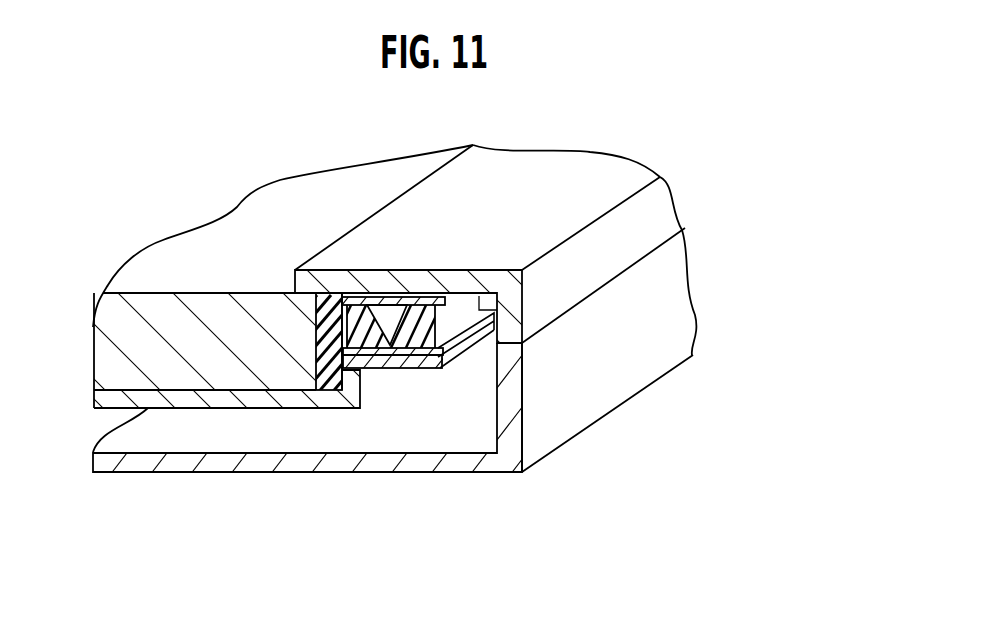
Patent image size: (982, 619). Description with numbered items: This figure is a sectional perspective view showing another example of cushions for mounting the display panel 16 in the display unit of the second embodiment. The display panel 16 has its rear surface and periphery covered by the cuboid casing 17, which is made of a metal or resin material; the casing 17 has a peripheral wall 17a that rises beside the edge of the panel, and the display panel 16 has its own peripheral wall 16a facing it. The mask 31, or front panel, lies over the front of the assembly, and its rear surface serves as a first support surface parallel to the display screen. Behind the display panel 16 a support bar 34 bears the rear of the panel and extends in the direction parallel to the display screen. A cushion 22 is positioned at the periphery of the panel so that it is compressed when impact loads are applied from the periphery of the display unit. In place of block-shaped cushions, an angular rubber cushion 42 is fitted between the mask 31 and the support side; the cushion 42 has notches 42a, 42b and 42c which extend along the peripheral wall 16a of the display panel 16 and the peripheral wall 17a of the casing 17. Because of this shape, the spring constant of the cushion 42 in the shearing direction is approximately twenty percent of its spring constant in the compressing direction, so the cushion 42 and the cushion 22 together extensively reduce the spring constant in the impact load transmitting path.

The display panel 16 is at (205, 260).
The peripheral wall of the display panel 16a is at (340, 327).
The casing 17 is at (467, 475).
The peripheral wall of the casing 17a is at (610, 357).
The cushion 22 is at (322, 392).
The mask 31 is at (643, 218).
The support bar 34 is at (243, 410).
The angular rubber cushion 42 is at (457, 315).
The notch 42a is at (383, 313).
The notch 42b is at (388, 370).
The notch 42c is at (415, 357).